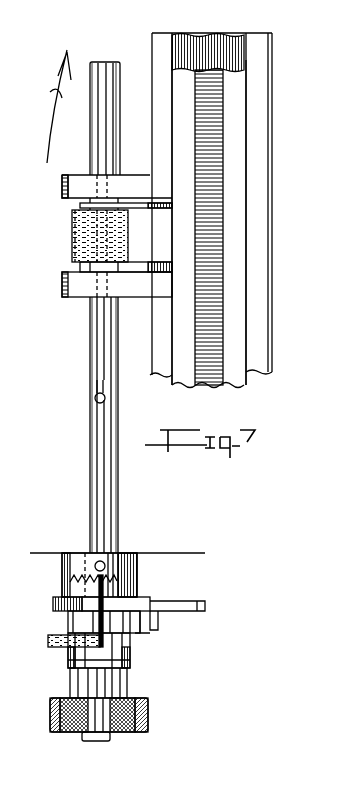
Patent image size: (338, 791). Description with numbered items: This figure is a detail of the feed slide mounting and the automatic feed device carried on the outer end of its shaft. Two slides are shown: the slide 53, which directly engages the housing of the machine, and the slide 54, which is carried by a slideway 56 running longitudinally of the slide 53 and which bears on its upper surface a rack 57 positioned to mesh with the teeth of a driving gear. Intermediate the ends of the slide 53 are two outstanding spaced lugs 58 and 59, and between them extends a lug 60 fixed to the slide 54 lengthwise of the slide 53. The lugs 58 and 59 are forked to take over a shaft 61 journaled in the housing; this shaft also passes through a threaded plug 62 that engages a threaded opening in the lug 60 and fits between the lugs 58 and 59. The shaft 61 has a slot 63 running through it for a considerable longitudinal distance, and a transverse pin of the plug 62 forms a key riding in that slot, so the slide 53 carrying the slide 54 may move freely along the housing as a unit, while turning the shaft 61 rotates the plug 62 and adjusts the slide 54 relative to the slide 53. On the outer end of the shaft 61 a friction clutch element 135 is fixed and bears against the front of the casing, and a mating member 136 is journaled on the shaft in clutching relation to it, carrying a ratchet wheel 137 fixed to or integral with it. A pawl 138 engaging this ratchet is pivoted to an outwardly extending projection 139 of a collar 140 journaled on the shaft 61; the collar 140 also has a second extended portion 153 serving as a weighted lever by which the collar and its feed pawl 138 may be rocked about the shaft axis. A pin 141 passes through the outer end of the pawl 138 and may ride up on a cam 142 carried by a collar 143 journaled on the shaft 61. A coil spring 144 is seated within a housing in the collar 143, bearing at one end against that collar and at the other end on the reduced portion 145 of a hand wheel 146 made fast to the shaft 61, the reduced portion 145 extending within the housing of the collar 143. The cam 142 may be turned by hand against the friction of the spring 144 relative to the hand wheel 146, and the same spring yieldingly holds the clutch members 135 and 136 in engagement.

The slide 53 is at (268, 320).
The slide 54 is at (237, 252).
The slideway 56 is at (244, 50).
The rack 57 is at (222, 155).
The lug 58 is at (64, 176).
The lug 59 is at (62, 287).
The lug 60 is at (72, 238).
The shaft 61 is at (96, 449).
The threaded plug 62 is at (80, 204).
The slot 63 is at (100, 357).
The friction clutch element 135 is at (137, 566).
The mating member 136 is at (137, 588).
The ratchet wheel 137 is at (60, 600).
The pawl 138 is at (150, 605).
The projection 139 is at (142, 633).
The collar 140 is at (68, 623).
The pin 141 is at (97, 592).
The cam 142 is at (50, 645).
The collar 143 is at (130, 655).
The coil spring 144 is at (68, 662).
The reduced portion 145 is at (125, 672).
The hand wheel 146 is at (150, 712).
The extended portion 153 is at (205, 607).